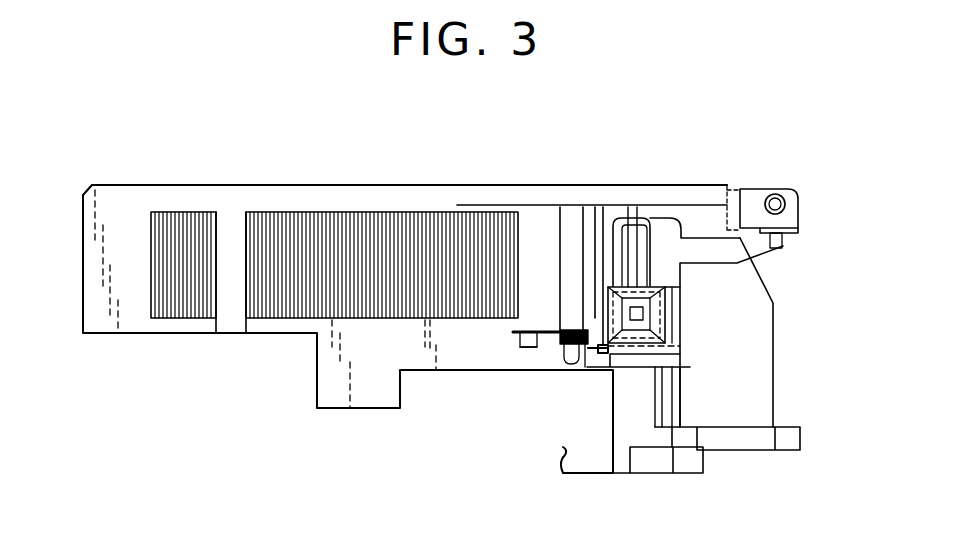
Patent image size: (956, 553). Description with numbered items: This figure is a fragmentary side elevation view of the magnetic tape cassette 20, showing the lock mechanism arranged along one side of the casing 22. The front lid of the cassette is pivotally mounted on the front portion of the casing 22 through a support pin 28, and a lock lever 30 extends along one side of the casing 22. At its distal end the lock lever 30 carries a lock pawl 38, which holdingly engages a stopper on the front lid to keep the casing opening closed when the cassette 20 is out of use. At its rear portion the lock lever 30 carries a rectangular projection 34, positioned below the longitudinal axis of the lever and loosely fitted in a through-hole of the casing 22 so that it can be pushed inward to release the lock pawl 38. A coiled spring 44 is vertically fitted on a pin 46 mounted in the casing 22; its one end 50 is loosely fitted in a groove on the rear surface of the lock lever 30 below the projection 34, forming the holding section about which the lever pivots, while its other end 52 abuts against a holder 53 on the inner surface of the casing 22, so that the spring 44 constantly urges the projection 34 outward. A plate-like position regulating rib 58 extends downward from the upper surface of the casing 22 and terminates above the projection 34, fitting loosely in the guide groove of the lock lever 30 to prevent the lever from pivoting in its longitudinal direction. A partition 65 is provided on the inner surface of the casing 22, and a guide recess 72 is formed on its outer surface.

The magnetic tape cassette 20 is at (205, 162).
The casing 22 is at (357, 185).
The guide recess 72 is at (231, 334).
The pin 46 is at (566, 232).
The other end of spring 52 is at (548, 330).
The spring 44 is at (570, 367).
The lock lever 30 is at (633, 222).
The position regulating rib 58 is at (645, 226).
The support pin 28 is at (790, 195).
The lock pawl 38 is at (780, 244).
The projection 34 is at (638, 313).
The partition 65 is at (680, 360).
The one end of spring 50 is at (645, 352).
The holder 53 is at (528, 345).